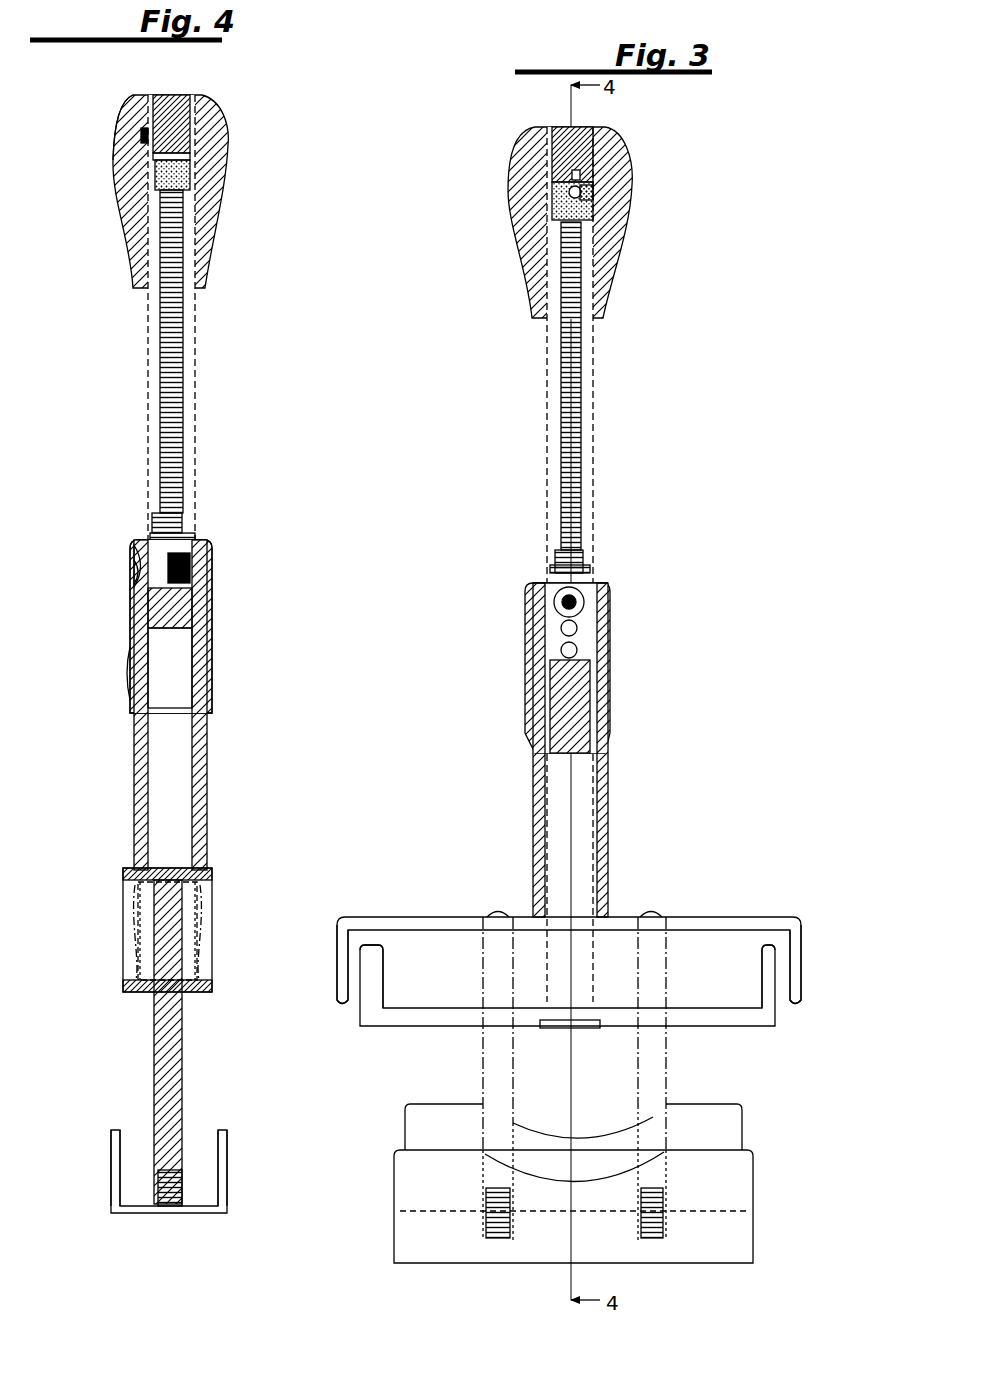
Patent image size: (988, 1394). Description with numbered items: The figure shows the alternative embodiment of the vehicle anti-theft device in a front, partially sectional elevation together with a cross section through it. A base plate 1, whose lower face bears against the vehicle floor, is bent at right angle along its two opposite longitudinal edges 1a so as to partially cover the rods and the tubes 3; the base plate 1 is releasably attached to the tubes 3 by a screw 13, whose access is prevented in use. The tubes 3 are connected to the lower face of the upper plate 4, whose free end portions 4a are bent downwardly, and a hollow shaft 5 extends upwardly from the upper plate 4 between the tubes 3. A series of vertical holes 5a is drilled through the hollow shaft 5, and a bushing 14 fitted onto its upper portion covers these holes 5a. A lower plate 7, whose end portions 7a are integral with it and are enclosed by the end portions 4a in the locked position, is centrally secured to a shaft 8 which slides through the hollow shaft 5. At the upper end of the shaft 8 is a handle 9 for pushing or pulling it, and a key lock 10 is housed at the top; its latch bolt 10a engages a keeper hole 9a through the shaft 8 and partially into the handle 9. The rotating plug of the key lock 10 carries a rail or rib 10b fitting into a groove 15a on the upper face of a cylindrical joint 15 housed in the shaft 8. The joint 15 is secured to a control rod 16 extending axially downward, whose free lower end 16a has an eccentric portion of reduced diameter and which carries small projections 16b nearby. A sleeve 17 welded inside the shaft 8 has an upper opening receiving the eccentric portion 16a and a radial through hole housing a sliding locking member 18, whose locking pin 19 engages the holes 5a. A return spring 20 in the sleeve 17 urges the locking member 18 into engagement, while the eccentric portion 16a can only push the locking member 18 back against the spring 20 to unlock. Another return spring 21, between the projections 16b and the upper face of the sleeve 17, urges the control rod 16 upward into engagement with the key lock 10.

In FIG. 4, the base plate 1 is at (206, 1214).
In FIG. 3, the base plate 1 is at (757, 1215).
In FIG. 4, the longitudinal edges of base plate 1a is at (117, 1180).
In FIG. 3, the longitudinal edges of base plate 1a is at (709, 1124).
In FIG. 4, the tubes 3 is at (173, 1066).
In FIG. 3, the tubes 3 is at (500, 1075).
In FIG. 4, the upper plate 4 is at (122, 868).
In FIG. 3, the upper plate 4 is at (710, 917).
In FIG. 4, the end portions of upper plate 4a is at (197, 897).
In FIG. 3, the end portions of upper plate 4a is at (801, 973).
In FIG. 4, the hollow shaft 5 is at (202, 798).
In FIG. 3, the hollow shaft 5 is at (608, 850).
In FIG. 4, the vertical holes 5a is at (135, 645).
In FIG. 3, the vertical holes 5a is at (600, 633).
In FIG. 4, the lower plate 7 is at (196, 992).
In FIG. 3, the lower plate 7 is at (409, 1017).
In FIG. 4, the end portions of lower plate 7a is at (206, 963).
In FIG. 3, the end portions of lower plate 7a is at (374, 982).
In FIG. 4, the shaft 8 is at (195, 425).
In FIG. 3, the shaft 8 is at (597, 412).
In FIG. 4, the handle 9 is at (213, 157).
In FIG. 3, the handle 9 is at (610, 200).
In FIG. 4, the keeper hole 9a is at (130, 160).
In FIG. 4, the key lock 10 is at (172, 112).
In FIG. 3, the key lock 10 is at (570, 140).
In FIG. 4, the latch bolt 10a is at (143, 133).
In FIG. 3, the latch bolt 10a is at (575, 172).
In FIG. 3, the rail or rib 10b is at (587, 188).
In FIG. 4, the screw 13 is at (165, 1216).
In FIG. 3, the screw 13 is at (505, 1238).
In FIG. 4, the bushing 14 is at (213, 680).
In FIG. 3, the bushing 14 is at (528, 715).
In FIG. 4, the joint 15 is at (187, 175).
In FIG. 3, the joint 15 is at (553, 208).
In FIG. 3, the groove 15a is at (582, 205).
In FIG. 4, the control rod 16 is at (183, 355).
In FIG. 3, the control rod 16 is at (563, 463).
In FIG. 4, the lower end of control rod 16a is at (203, 593).
In FIG. 3, the lower end of control rod 16a is at (584, 598).
In FIG. 4, the small projections 16b is at (180, 515).
In FIG. 3, the small projections 16b is at (582, 548).
In FIG. 4, the sleeve 17 is at (172, 630).
In FIG. 4, the locking member 18 is at (145, 553).
In FIG. 4, the locking pin 19 is at (132, 567).
In FIG. 4, the return spring 20 is at (193, 560).
In FIG. 4, the return spring 21 is at (193, 533).
In FIG. 3, the return spring 21 is at (583, 567).